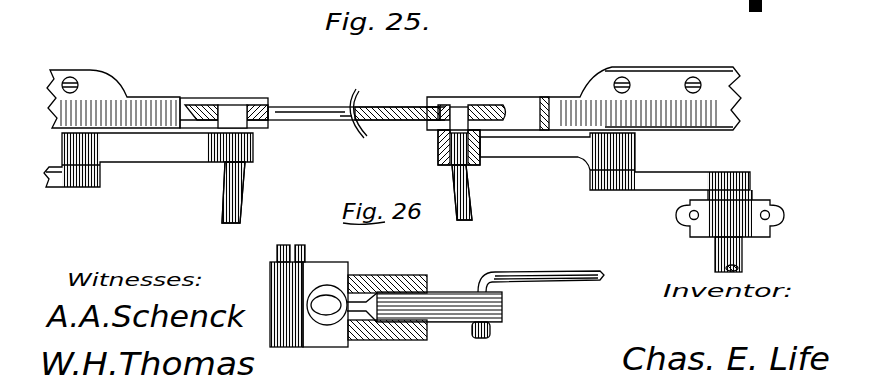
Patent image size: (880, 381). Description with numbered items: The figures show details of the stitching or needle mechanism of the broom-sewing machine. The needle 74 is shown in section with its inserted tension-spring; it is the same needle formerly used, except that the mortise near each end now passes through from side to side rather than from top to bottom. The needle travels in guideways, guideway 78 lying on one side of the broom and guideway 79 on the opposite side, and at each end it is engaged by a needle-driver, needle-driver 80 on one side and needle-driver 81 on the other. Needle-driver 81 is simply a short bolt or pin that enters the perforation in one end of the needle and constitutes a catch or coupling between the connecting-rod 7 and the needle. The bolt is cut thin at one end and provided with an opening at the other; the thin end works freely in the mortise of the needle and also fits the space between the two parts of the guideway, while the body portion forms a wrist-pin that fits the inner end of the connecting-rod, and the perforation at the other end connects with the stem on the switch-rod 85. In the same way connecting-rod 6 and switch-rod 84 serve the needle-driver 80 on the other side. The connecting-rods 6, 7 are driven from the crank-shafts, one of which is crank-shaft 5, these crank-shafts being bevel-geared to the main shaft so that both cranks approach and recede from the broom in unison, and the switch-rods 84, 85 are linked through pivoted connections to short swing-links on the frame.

In FIG. 25, the guideway 78 is at (97, 97).
In FIG. 25, the guideway 79 is at (597, 93).
In FIG. 25, the needle-driver 80 is at (233, 116).
In FIG. 25, the needle-driver 81 is at (457, 109).
In FIG. 26, the needle-driver 81 is at (361, 318).
In FIG. 25, the needle 74 is at (384, 121).
In FIG. 25, the connecting-rod 6 is at (158, 148).
In FIG. 25, the connecting-rod 7 is at (536, 150).
In FIG. 25, the switch-rod 84 is at (239, 193).
In FIG. 25, the switch-rod 85 is at (474, 192).
In FIG. 26, the switch-rod 85 is at (551, 273).
In FIG. 25, the crank-shaft 5 is at (743, 268).